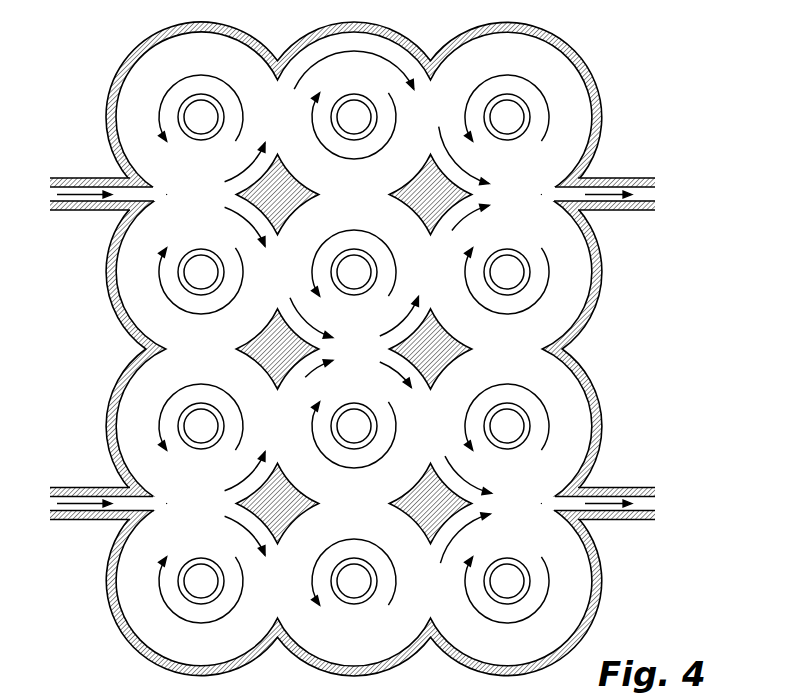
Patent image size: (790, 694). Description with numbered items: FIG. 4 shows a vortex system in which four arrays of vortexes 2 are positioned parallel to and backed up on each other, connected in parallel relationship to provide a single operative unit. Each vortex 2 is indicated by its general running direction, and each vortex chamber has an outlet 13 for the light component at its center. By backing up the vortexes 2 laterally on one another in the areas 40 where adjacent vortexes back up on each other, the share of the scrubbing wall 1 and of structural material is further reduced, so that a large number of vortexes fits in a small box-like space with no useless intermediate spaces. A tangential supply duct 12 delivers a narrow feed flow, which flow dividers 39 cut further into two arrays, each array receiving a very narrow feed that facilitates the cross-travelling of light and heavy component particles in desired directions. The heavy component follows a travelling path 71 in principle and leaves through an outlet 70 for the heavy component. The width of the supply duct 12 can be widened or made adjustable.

The wall of a vortex chamber 1 is at (166, 38).
The vortex 2 is at (160, 107).
The tangential supply duct 12 is at (91, 185).
The outlet for a light component 13 is at (203, 127).
The flow divider 39 is at (262, 373).
The area where adjacent vortexes back up on each other 40 is at (286, 275).
The outlet for a heavy component 70 is at (641, 195).
The travelling path of a heavy component 71 is at (380, 52).